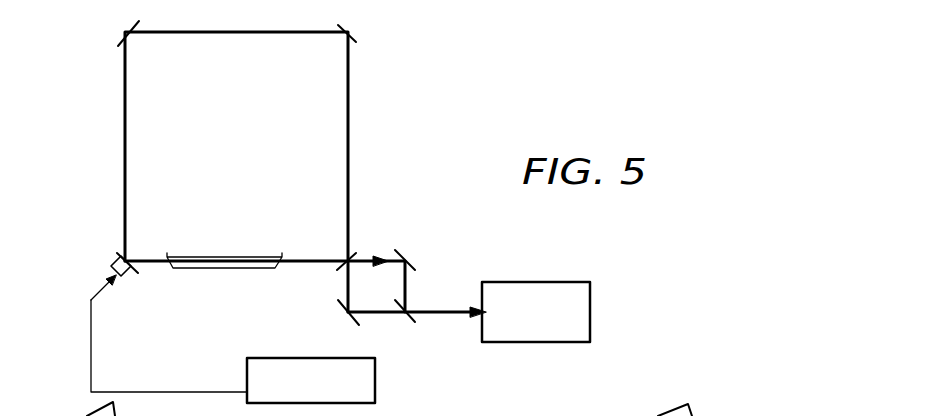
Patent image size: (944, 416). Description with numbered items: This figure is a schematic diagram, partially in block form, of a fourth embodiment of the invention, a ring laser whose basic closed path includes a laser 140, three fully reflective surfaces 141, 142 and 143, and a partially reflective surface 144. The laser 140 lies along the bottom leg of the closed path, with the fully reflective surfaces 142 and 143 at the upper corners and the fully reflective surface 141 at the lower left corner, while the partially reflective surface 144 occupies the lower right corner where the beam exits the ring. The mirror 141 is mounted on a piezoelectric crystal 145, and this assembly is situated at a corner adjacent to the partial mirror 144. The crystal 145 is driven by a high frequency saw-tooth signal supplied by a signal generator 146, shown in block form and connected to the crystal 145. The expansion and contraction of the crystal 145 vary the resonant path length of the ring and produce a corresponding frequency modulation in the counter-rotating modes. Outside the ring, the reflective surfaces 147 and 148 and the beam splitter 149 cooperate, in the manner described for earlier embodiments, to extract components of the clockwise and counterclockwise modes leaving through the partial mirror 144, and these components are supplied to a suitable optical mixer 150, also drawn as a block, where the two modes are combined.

The laser 140 is at (211, 269).
The fully reflective surface 141 is at (118, 256).
The fully reflective surface 142 is at (121, 42).
The fully reflective surface 143 is at (357, 37).
The partially reflective surface 144 is at (354, 256).
The piezoelectric crystal 145 is at (98, 283).
The signal generator 146 is at (247, 380).
The reflective surface 147 is at (337, 305).
The reflective surface 148 is at (414, 264).
The beam splitter 149 is at (414, 321).
The optical mixer 150 is at (553, 344).